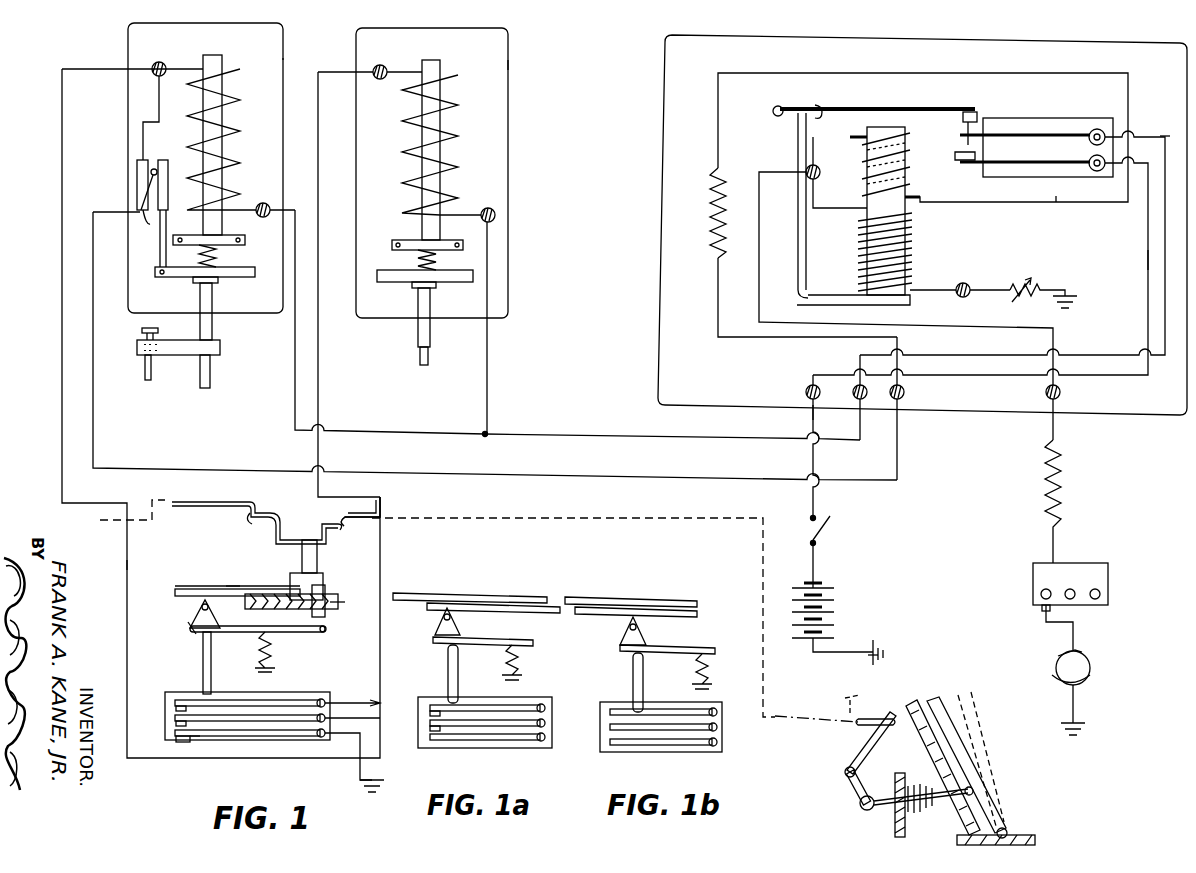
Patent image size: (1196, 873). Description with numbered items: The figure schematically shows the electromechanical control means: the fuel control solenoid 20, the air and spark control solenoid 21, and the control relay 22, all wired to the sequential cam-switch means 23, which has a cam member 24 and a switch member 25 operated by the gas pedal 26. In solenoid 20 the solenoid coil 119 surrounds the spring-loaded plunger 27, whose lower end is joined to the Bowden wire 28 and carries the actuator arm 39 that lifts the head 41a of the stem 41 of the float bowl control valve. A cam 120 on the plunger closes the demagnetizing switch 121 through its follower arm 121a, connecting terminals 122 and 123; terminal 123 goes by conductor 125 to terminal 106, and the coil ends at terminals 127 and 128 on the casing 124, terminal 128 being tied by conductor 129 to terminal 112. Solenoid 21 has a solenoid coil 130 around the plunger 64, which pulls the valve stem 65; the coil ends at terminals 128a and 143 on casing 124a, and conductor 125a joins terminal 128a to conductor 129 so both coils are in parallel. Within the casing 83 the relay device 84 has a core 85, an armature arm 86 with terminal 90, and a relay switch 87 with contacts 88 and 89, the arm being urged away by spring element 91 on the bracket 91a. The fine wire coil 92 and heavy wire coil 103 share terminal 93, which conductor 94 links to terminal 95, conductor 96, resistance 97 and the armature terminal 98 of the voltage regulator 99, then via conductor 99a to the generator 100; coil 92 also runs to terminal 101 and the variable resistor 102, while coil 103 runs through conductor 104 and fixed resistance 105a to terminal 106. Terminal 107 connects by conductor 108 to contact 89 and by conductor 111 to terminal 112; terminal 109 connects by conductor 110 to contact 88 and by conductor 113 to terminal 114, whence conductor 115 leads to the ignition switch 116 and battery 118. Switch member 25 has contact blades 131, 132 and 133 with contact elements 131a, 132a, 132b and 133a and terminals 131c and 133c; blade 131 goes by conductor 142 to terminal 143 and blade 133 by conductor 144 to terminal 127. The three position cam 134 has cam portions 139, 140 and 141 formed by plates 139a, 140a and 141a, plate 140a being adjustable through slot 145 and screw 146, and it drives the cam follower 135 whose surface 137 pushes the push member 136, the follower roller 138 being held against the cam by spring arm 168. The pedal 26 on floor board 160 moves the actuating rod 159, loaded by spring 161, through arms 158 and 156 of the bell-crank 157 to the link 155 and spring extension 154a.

In FIG. 1, the fuel control solenoid 20 is at (236, 16).
In FIG. 1, the air and spark control solenoid 21 is at (449, 18).
In FIG. 1, the control relay 22 is at (750, 24).
In FIG. 1, the sequential cam-switch means 23 is at (168, 568).
In FIG. 1, the cam member 24 is at (358, 616).
In FIG. 1, the switch member 25 is at (252, 752).
In FIG. 1, the gas pedal 26 is at (942, 700).
In FIG. 1, the plunger 27 is at (223, 120).
In FIG. 1, the Bowden wire 28 is at (210, 385).
In FIG. 1, the actuator arm 39 is at (220, 350).
In FIG. 1, the stem 41 is at (147, 378).
In FIG. 1, the head 41a is at (142, 330).
In FIG. 1, the solenoid plunger 64 is at (440, 120).
In FIG. 1, the valve stem 65 is at (430, 358).
In FIG. 1, the casing 83 is at (1112, 42).
In FIG. 1, the relay device 84 is at (868, 94).
In FIG. 1, the core 85 is at (870, 134).
In FIG. 1, the armature arm 86 is at (940, 105).
In FIG. 1, the relay switch 87 is at (1042, 118).
In FIG. 1, the contact 88 is at (958, 156).
In FIG. 1, the contact 89 is at (968, 143).
In FIG. 1, the terminal 90 is at (972, 110).
In FIG. 1, the spring element 91 is at (818, 104).
In FIG. 1, the bracket 91a is at (798, 126).
In FIG. 1, the fine wire coil 92 is at (910, 236).
In FIG. 1, the terminal 93 is at (819, 170).
In FIG. 1, the conductor 94 is at (759, 282).
In FIG. 1, the terminal 95 is at (1061, 392).
In FIG. 1, the conductor 96 is at (1056, 440).
In FIG. 1, the resistance 97 is at (1058, 490).
In FIG. 1, the armature terminal 98 is at (1041, 595).
In FIG. 1, the voltage regulator 99 is at (1088, 563).
In FIG. 1, the conductor 99a is at (1046, 622).
In FIG. 1, the generator 100 is at (1092, 668).
In FIG. 1, the terminal 101 is at (980, 270).
In FIG. 1, the variable resistor 102 is at (1022, 282).
In FIG. 1, the heavy wire coil 103 is at (935, 188).
In FIG. 1, the conductor 104 is at (1056, 198).
In FIG. 1, the fixed resistance 105a is at (712, 246).
In FIG. 1, the terminal 106 is at (905, 390).
In FIG. 1, the terminal 107 is at (1100, 128).
In FIG. 1, the conductor 108 is at (1058, 130).
In FIG. 1, the terminal 109 is at (1094, 172).
In FIG. 1, the conductor 110 is at (1018, 166).
In FIG. 1, the conductor 111 is at (1166, 136).
In FIG. 1, the terminal 112 is at (862, 402).
In FIG. 1, the conductor 113 is at (1148, 260).
In FIG. 1, the terminal 114 is at (806, 392).
In FIG. 1, the conductor 115 is at (810, 412).
In FIG. 1, the ignition switch 116 is at (820, 533).
In FIG. 1, the battery 118 is at (826, 606).
In FIG. 1, the solenoid coil 119 is at (220, 168).
In FIG. 1, the cam 120 is at (160, 160).
In FIG. 1, the demagnetizing switch 121 is at (137, 200).
In FIG. 1, the follower arm 121a is at (148, 184).
In FIG. 1, the terminal 122 is at (138, 160).
In FIG. 1, the terminal 123 is at (146, 212).
In FIG. 1, the casing 124 is at (284, 60).
In FIG. 1, the casing 124a is at (508, 70).
In FIG. 1, the conductor 125 is at (93, 298).
In FIG. 1, the conductor 125a is at (487, 346).
In FIG. 1, the terminal 127 is at (160, 62).
In FIG. 1, the terminal 128 is at (268, 205).
In FIG. 1, the terminal 128a is at (496, 208).
In FIG. 1, the conductor 129 is at (295, 388).
In FIG. 1, the solenoid coil 130 is at (448, 106).
In FIG. 1, the contact blade 131 is at (290, 700).
In FIG. 1a, the contact blade 131 is at (525, 705).
In FIG. 1b, the contact blade 131 is at (700, 710).
In FIG. 1, the contact element 131a is at (176, 706).
In FIG. 1a, the contact element 131a is at (428, 710).
In FIG. 1, the terminal 131c is at (334, 704).
In FIG. 1, the contact blade 132 is at (296, 716).
In FIG. 1a, the contact blade 132 is at (530, 722).
In FIG. 1b, the contact blade 132 is at (706, 724).
In FIG. 1, the contact element 132a is at (178, 723).
In FIG. 1a, the contact element 132a is at (428, 726).
In FIG. 1, the contact element 132b is at (176, 738).
In FIG. 1, the contact blade 133 is at (290, 736).
In FIG. 1a, the contact blade 133 is at (518, 740).
In FIG. 1b, the contact blade 133 is at (708, 744).
In FIG. 1, the contact element 133a is at (196, 740).
In FIG. 1, the terminal 133c is at (345, 735).
In FIG. 1, the three position cam 134 is at (237, 578).
In FIG. 1, the cam follower 135 is at (190, 628).
In FIG. 1, the push member 136 is at (211, 672).
In FIG. 1a, the push member 136 is at (462, 664).
In FIG. 1b, the push member 136 is at (644, 670).
In FIG. 1, the surface 137 is at (210, 632).
In FIG. 1, the follower roller 138 is at (195, 603).
In FIG. 1, the cam portion 139 is at (290, 612).
In FIG. 1a, the plate 139a is at (540, 616).
In FIG. 1b, the plate 139a is at (698, 616).
In FIG. 1, the cam portion 140 is at (222, 590).
In FIG. 1a, the plate 140a is at (470, 614).
In FIG. 1b, the plate 140a is at (698, 612).
In FIG. 1, the cam portion 141 is at (175, 590).
In FIG. 1a, the plate 141a is at (410, 592).
In FIG. 1b, the plate 141a is at (680, 584).
In FIG. 1, the conductor 142 is at (318, 118).
In FIG. 1, the terminal 143 is at (384, 65).
In FIG. 1, the conductor 144 is at (62, 116).
In FIG. 1, the elongated slot 145 is at (290, 584).
In FIG. 1, the screw 146 is at (318, 612).
In FIG. 1, the rear extension 154a is at (250, 500).
In FIG. 1, the link 155 is at (470, 510).
In FIG. 1, the arm 156 is at (890, 728).
In FIG. 1, the gas pedal bell-crank 157 is at (852, 730).
In FIG. 1, the arm 158 is at (860, 798).
In FIG. 1, the actuating rod 159 is at (945, 800).
In FIG. 1, the floor board 160 is at (1010, 835).
In FIG. 1, the spring 161 is at (908, 786).
In FIG. 1, the spring arm 168 is at (272, 648).